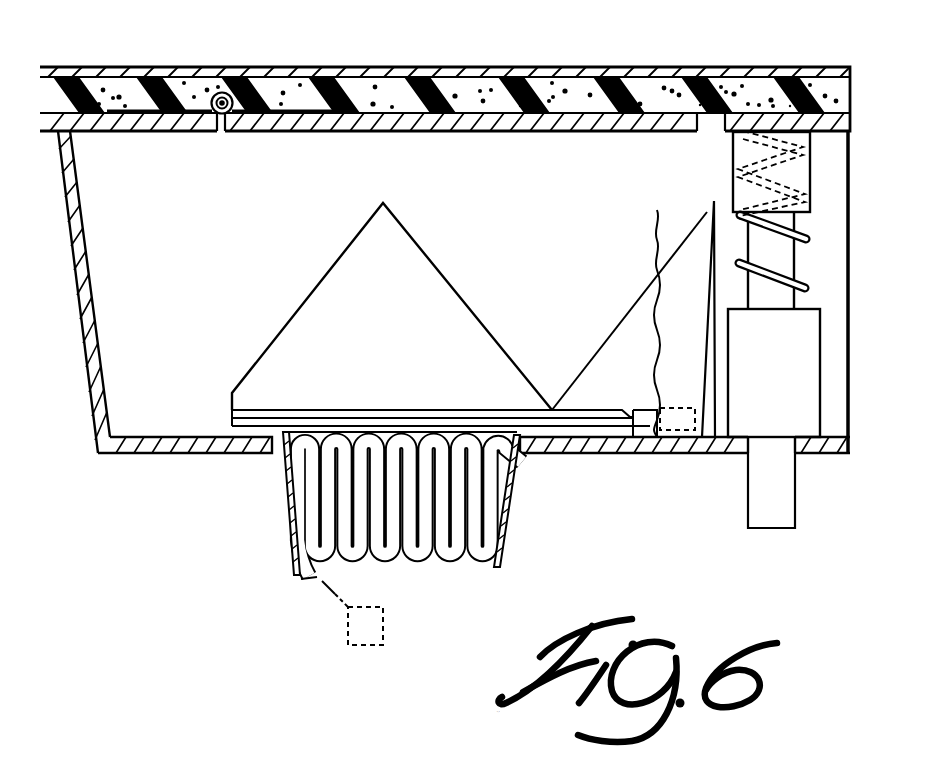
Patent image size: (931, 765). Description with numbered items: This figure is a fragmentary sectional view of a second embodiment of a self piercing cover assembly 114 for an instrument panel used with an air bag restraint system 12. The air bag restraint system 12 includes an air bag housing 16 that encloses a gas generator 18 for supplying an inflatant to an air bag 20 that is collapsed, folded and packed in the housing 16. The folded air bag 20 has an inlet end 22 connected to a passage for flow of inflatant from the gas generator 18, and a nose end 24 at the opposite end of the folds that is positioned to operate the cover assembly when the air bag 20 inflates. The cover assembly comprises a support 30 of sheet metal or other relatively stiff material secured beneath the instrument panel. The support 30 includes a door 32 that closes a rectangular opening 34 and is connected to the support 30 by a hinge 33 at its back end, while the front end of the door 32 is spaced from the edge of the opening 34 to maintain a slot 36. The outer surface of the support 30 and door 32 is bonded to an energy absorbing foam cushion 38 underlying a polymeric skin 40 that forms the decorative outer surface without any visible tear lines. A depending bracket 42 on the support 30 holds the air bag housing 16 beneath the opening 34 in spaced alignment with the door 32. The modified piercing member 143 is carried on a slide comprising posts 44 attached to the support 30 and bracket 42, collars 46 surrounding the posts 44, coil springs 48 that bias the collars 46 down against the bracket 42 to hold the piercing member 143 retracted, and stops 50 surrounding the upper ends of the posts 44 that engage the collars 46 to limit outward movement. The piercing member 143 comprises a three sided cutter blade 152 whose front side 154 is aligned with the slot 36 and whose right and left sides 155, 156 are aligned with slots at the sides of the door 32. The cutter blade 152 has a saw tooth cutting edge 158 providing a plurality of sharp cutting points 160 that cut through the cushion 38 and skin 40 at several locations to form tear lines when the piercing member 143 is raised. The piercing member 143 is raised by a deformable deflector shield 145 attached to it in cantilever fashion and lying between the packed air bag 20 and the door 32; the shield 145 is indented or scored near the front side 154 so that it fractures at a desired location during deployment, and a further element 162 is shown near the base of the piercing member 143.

The air bag restraint system 12 is at (286, 527).
The air bag housing 16 is at (508, 551).
The gas generator 18 is at (348, 637).
The air bag 20 is at (447, 566).
The inlet end 22 is at (303, 580).
The nose end 24 is at (506, 466).
The support 30 is at (62, 67).
The door 32 is at (466, 125).
The hinge 33 is at (231, 93).
The rectangular opening 34 is at (221, 122).
The slot 36 is at (709, 136).
The cushion 38 is at (618, 74).
The skin 40 is at (468, 72).
The bracket 42 is at (93, 397).
The posts 44 is at (786, 262).
The collars 46 is at (805, 403).
The coil springs 48 is at (805, 232).
The stops 50 is at (800, 170).
The self piercing cover assembly 114 is at (82, 312).
The piercing member 143 is at (428, 264).
The deflector shield 145 is at (333, 410).
The cutter blade 152 is at (720, 384).
The front side 154 is at (703, 307).
The right side 155 is at (418, 327).
The left side 156 is at (615, 358).
The saw tooth cutting edge 158 is at (688, 260).
The cutting points 160 is at (703, 222).
The detector element 162 is at (648, 434).